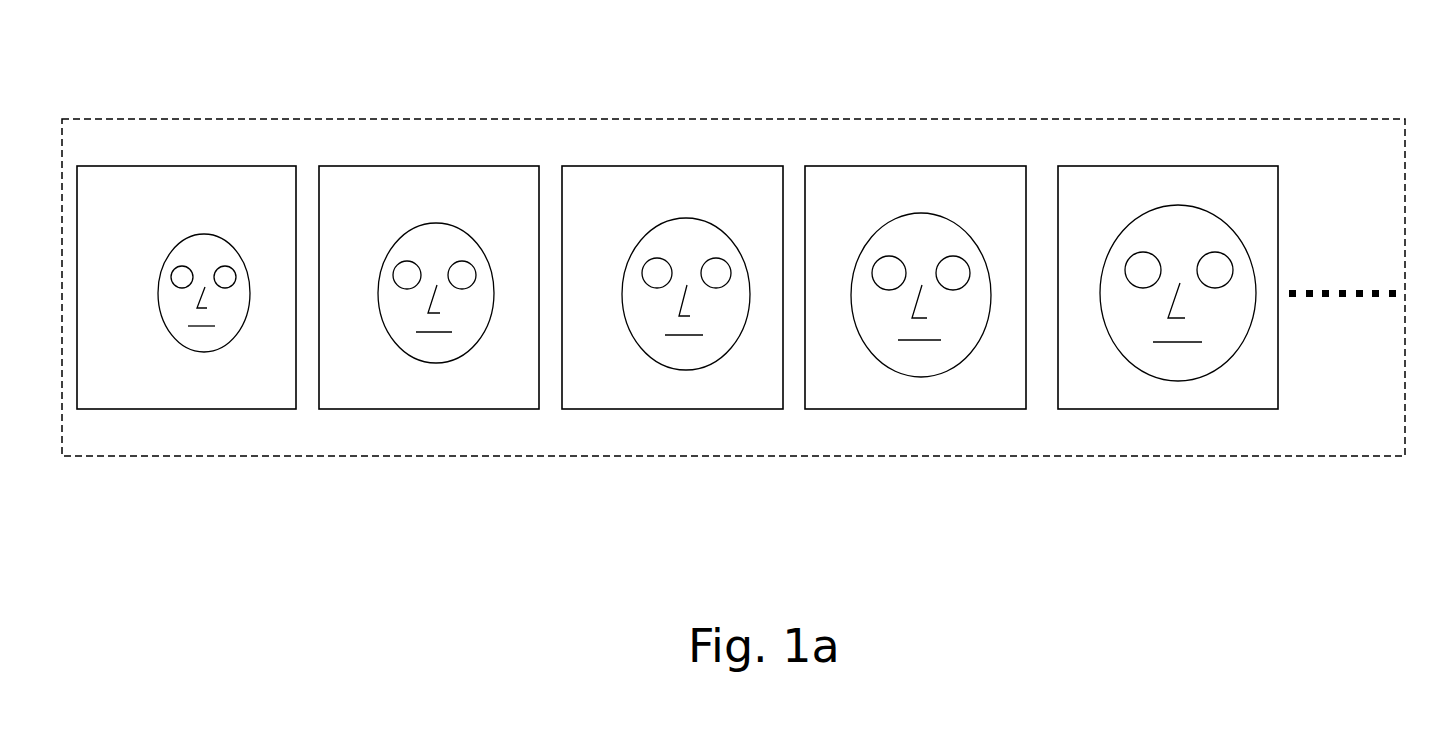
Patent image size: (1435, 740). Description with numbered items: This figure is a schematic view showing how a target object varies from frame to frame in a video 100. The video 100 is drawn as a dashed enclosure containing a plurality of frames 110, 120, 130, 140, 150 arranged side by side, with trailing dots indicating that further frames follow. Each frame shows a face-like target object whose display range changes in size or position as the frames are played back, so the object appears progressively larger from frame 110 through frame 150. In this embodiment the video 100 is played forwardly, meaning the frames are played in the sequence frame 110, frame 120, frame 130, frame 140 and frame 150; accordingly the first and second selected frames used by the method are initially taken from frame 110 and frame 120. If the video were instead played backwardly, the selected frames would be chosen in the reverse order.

The video 100 is at (733, 456).
The frame 110 is at (186, 166).
The frame 120 is at (430, 166).
The frame 130 is at (673, 166).
The frame 140 is at (915, 166).
The frame 150 is at (1167, 166).